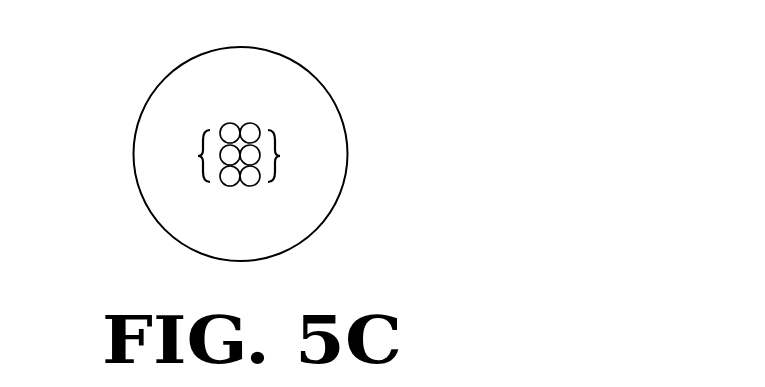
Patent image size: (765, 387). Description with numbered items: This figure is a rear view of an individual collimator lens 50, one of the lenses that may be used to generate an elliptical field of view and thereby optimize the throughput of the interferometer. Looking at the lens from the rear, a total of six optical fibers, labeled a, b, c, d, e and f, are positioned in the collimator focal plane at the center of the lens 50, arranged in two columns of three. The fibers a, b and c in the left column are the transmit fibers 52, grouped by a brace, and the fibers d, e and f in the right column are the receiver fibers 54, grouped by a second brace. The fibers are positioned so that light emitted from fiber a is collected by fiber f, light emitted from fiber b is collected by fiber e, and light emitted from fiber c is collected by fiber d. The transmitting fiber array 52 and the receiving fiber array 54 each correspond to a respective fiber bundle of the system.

The collimator lens 50 is at (353, 65).
The transmit fibers 52 is at (190, 156).
The receiver fibers 54 is at (290, 156).